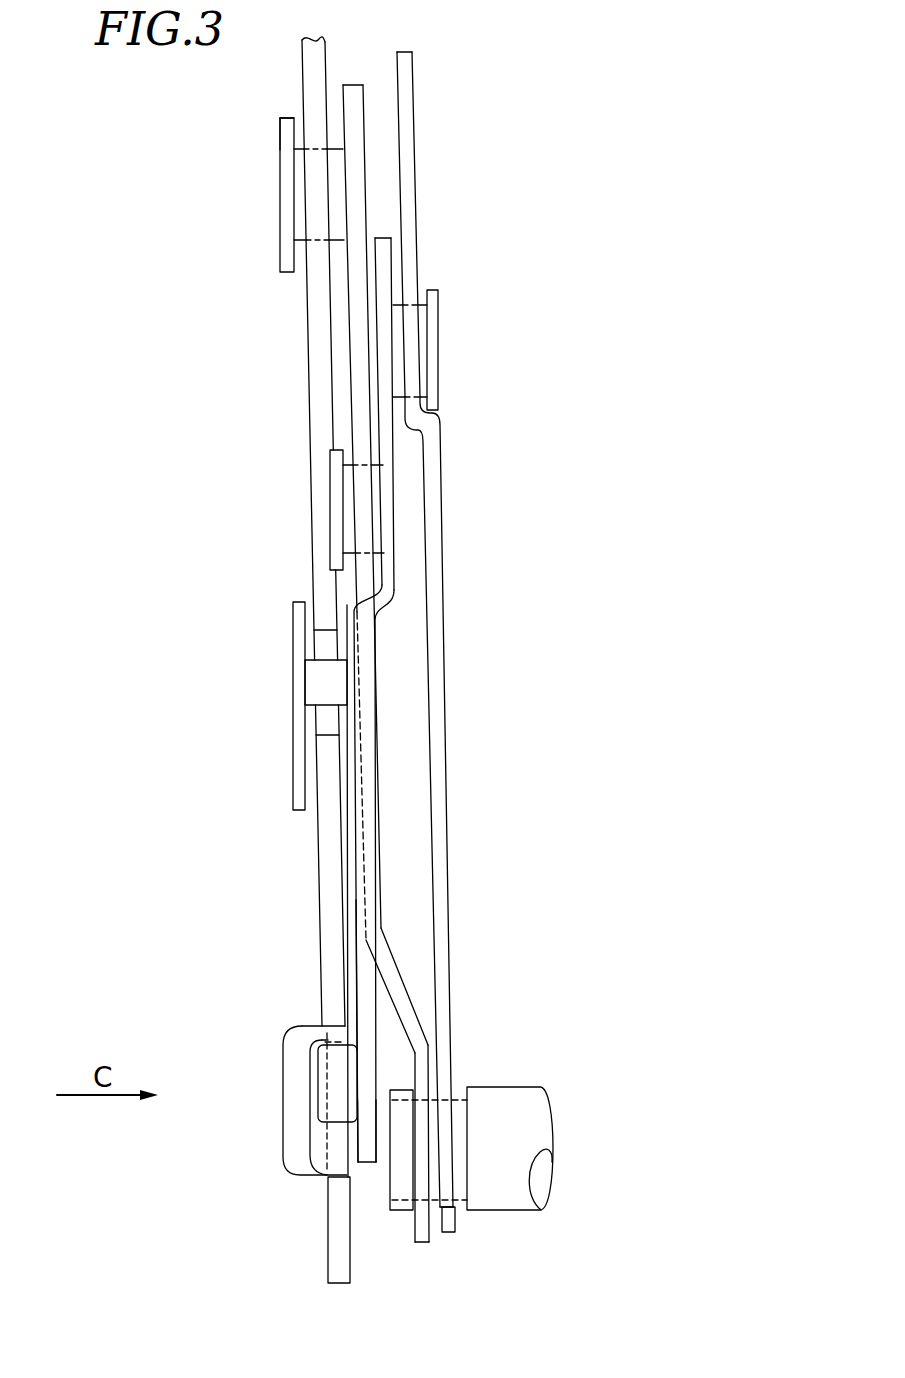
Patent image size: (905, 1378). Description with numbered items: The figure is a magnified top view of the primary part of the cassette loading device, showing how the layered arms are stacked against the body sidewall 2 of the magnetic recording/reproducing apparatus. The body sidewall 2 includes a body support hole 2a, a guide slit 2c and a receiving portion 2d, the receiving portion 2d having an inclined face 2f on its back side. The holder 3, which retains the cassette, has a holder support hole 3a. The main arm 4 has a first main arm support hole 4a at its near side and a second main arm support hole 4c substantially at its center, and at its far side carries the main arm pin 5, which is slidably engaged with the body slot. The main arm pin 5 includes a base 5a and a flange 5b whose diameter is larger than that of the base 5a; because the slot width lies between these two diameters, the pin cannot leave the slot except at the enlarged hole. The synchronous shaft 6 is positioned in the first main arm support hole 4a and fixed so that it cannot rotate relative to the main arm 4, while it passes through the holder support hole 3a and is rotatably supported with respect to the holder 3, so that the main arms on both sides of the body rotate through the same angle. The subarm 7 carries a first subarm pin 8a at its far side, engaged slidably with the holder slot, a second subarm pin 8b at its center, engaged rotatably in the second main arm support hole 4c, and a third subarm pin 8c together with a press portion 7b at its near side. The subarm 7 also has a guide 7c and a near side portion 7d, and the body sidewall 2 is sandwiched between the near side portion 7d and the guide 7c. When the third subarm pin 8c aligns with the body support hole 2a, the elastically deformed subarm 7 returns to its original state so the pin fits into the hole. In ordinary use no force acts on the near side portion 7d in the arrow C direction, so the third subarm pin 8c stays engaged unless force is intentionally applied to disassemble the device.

The body sidewall 2 is at (328, 911).
The body support hole 2a is at (323, 1168).
The guide slit 2c is at (328, 626).
The receiving portion 2d is at (292, 1077).
The inclined face 2f is at (335, 1033).
The holder 3 is at (437, 487).
The holder support hole 3a is at (450, 1233).
The main arm 4 is at (353, 330).
The first main arm support hole 4a is at (398, 1210).
The second main arm support hole 4c is at (368, 460).
The main arm pin 5 is at (282, 192).
The base 5a is at (332, 155).
The flange 5b is at (284, 118).
The synchronous shaft 6 is at (515, 1198).
The subarm 7 is at (393, 575).
The press portion 7b is at (363, 1080).
The guide 7c is at (293, 678).
The near side portion 7d is at (363, 982).
The first subarm pin 8a is at (432, 352).
The second subarm pin 8b is at (335, 503).
The third subarm pin 8c is at (333, 1093).